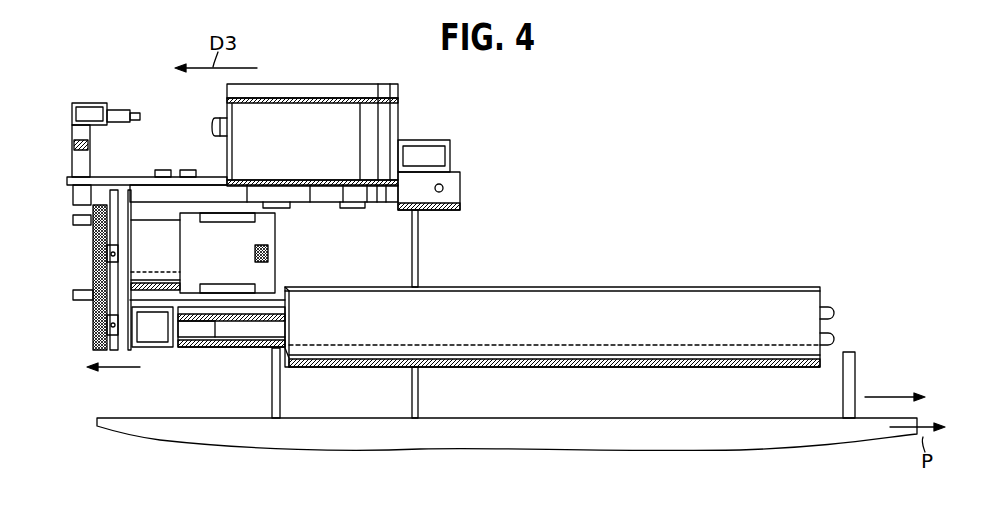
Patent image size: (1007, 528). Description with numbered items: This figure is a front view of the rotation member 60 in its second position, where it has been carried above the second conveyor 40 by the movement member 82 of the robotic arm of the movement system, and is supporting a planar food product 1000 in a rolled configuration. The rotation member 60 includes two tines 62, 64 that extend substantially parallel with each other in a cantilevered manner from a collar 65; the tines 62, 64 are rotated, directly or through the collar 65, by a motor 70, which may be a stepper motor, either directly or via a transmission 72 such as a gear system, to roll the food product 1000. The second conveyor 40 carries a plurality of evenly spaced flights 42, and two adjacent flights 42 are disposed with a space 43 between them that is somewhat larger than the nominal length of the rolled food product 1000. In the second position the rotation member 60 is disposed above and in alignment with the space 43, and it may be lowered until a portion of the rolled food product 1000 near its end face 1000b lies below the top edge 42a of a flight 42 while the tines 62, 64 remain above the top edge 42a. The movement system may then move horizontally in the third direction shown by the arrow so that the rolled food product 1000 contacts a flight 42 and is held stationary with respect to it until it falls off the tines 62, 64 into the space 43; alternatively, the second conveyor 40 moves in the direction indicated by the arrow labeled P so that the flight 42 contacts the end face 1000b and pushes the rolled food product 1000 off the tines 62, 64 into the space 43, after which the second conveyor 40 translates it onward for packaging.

The movement member 82 is at (386, 120).
The motor 70 is at (190, 256).
The transmission 72 is at (93, 283).
The tine 62 is at (190, 305).
The rotation member 60 is at (217, 350).
The tine 64 is at (230, 342).
The collar 65 is at (190, 344).
The flight 42 is at (272, 402).
The top edge 42a is at (289, 355).
The second conveyor 40 is at (448, 437).
The space 43 is at (608, 393).
The planar food product 1000 is at (765, 353).
The end face 1000b is at (284, 292).